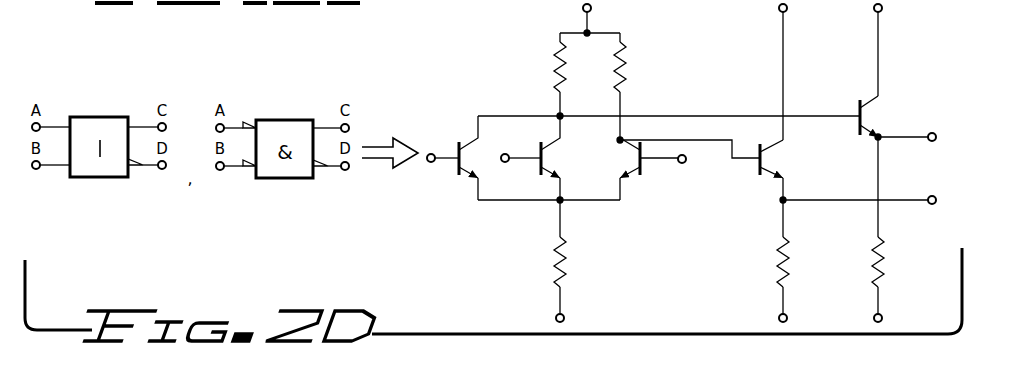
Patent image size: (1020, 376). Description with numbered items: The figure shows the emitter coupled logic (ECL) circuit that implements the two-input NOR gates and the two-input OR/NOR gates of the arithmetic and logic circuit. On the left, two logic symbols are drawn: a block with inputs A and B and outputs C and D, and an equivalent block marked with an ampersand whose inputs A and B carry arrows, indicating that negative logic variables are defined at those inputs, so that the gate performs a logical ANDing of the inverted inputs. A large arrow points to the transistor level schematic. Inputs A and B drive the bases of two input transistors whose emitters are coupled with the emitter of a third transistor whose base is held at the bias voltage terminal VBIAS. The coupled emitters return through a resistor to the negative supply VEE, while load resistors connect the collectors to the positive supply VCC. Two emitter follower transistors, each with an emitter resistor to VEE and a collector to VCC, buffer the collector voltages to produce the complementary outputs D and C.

The input A is at (442, 146).
The input B is at (520, 146).
The output C is at (867, 201).
The output D is at (915, 138).
The positive supply voltage terminal VCC is at (753, 70).
The negative supply voltage terminal VEE is at (737, 307).
The bias voltage terminal VBIAS is at (677, 173).